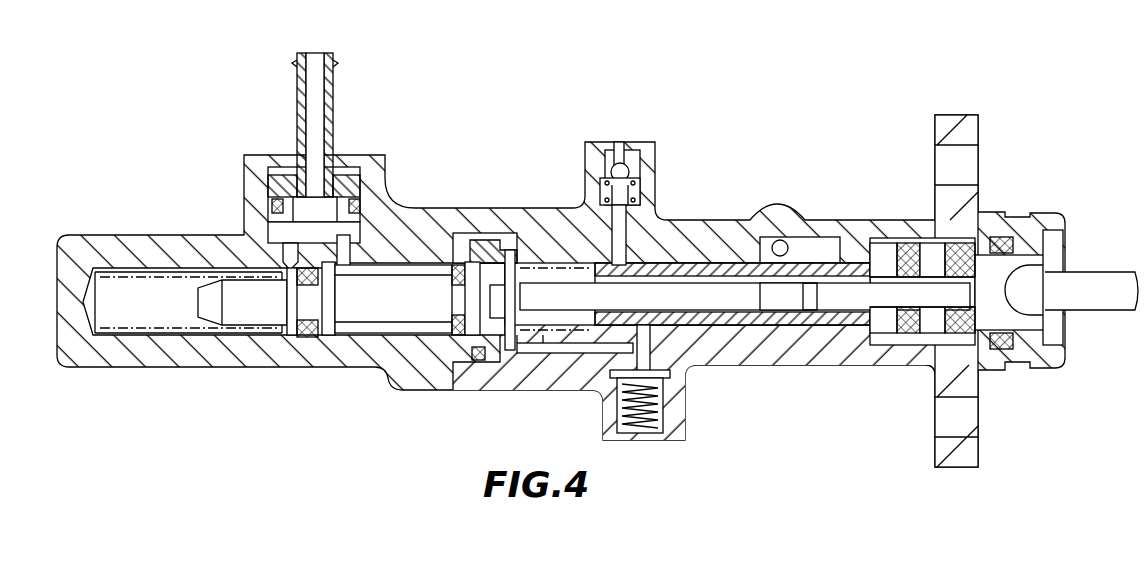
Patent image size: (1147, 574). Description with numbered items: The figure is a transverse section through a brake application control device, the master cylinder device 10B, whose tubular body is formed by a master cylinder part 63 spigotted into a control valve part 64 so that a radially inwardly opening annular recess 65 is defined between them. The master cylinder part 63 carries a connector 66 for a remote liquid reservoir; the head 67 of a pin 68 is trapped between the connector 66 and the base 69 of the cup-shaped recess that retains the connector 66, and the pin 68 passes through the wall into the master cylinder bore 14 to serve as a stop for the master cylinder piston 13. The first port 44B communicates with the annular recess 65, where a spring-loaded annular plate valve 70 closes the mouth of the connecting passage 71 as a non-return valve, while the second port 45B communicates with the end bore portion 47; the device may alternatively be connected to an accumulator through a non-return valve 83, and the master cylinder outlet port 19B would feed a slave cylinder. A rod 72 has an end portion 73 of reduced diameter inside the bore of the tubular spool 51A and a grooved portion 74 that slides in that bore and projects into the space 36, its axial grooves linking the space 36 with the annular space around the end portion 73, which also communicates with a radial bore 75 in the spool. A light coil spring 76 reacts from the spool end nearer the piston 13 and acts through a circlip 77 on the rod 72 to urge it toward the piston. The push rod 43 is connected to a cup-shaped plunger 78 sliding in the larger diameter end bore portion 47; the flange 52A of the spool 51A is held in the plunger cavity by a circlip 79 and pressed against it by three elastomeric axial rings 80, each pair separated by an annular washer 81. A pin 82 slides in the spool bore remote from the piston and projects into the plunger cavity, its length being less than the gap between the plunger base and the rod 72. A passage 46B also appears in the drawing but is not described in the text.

The master cylinder device 10B is at (222, 373).
The master cylinder piston 13 is at (397, 313).
The master cylinder bore 14 is at (343, 337).
The master cylinder outlet port 19B is at (124, 288).
The space 36 is at (522, 264).
The push rod 43 is at (1076, 292).
The first port 44B is at (650, 356).
The second port 45B is at (800, 238).
The passage 46B is at (622, 242).
The end bore portion 47 is at (826, 312).
The tubular spool 51A is at (878, 262).
The flange 52A is at (948, 348).
The master cylinder part 63 is at (408, 234).
The control valve part 64 is at (574, 230).
The annular recess 65 is at (500, 240).
The connector 66 is at (340, 172).
The head 67 is at (370, 224).
The pin 68 is at (350, 260).
The base 69 is at (266, 232).
The annular plate valve 70 is at (505, 352).
The connecting passage 71 is at (581, 353).
The rod 72 is at (706, 287).
The end portion 73 is at (781, 312).
The grooved portion 74 is at (742, 330).
The radial bore 75 is at (789, 254).
The light coil spring 76 is at (541, 348).
The circlip 77 is at (520, 340).
The cup-shaped plunger 78 is at (1010, 247).
The circlip 79 is at (955, 346).
The axial rings 80 is at (992, 342).
The annular washer 81 is at (906, 250).
The pin 82 is at (928, 332).
The non-return valve 83 is at (632, 178).